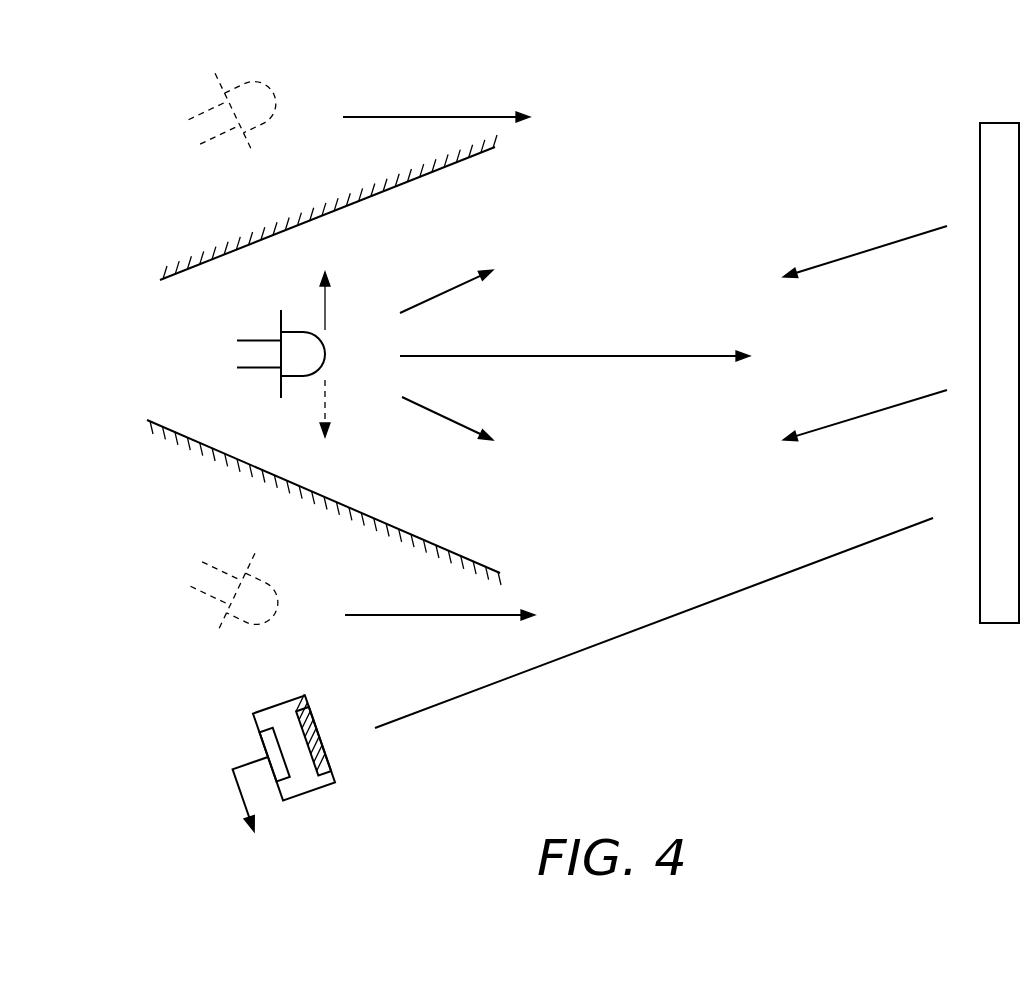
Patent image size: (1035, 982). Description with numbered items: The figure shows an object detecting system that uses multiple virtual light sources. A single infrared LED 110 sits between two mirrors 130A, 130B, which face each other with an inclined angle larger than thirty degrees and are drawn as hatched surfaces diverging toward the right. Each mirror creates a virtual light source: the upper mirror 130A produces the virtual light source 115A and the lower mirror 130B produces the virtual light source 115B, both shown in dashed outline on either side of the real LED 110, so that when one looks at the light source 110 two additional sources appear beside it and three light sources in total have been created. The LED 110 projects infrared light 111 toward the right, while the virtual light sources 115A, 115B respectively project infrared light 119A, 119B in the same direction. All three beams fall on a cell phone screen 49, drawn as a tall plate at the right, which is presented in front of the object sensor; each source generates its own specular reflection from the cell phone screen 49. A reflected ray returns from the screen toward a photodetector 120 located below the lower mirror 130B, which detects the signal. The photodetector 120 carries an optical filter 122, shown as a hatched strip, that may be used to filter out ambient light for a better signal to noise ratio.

The cell phone screen 49 is at (980, 156).
The infrared LED 110 is at (298, 332).
The infrared light 111 is at (610, 356).
The virtual light source 115A is at (250, 80).
The virtual light source 115B is at (267, 586).
The infrared light 119A is at (403, 117).
The infrared light 119B is at (403, 617).
The photodetector 120 is at (295, 763).
The optical filter 122 is at (311, 734).
The mirror 130A is at (171, 283).
The mirror 130B is at (156, 421).